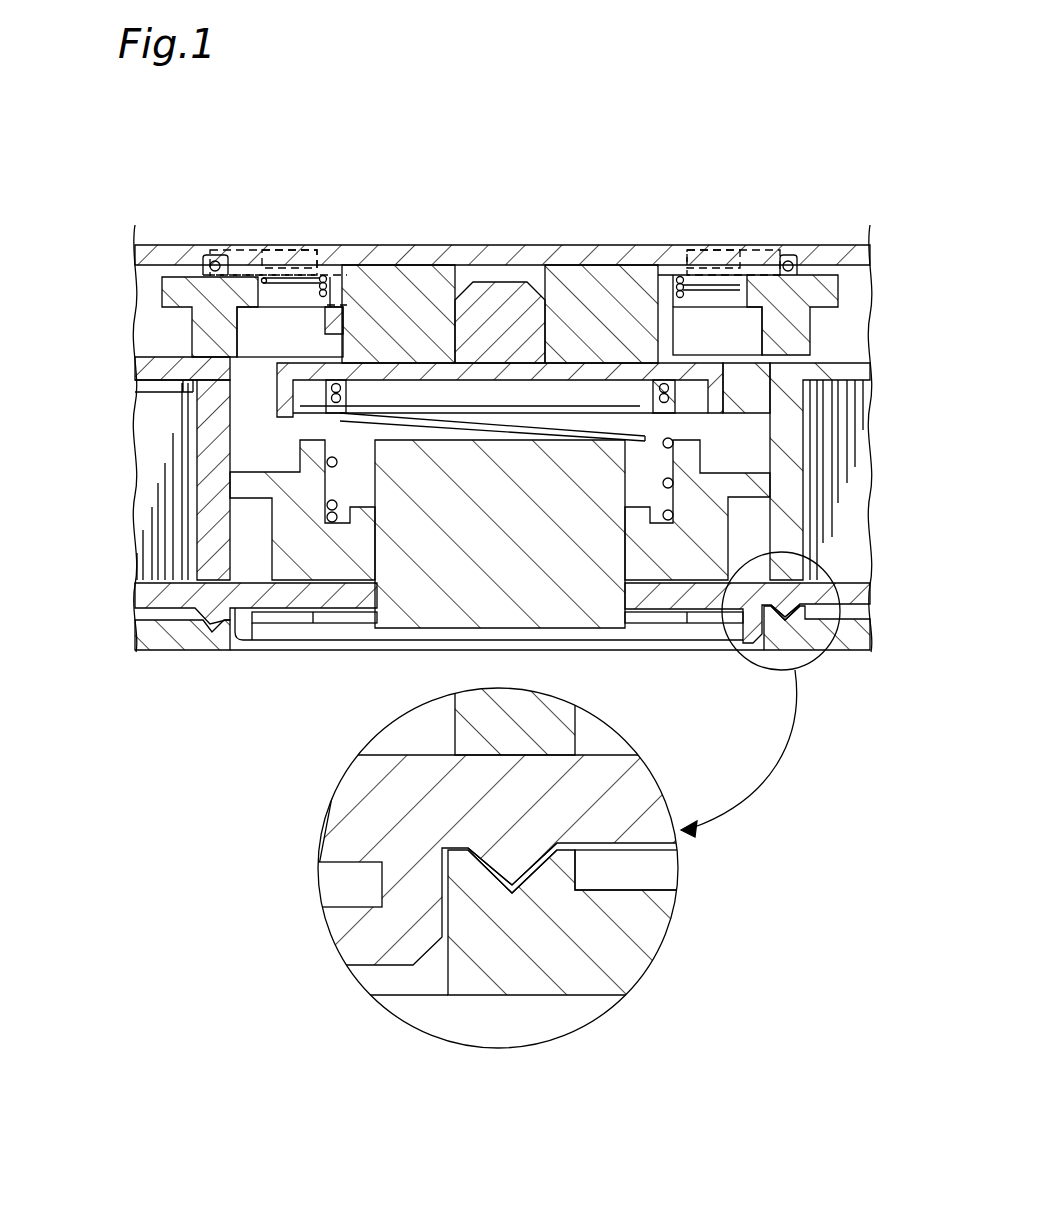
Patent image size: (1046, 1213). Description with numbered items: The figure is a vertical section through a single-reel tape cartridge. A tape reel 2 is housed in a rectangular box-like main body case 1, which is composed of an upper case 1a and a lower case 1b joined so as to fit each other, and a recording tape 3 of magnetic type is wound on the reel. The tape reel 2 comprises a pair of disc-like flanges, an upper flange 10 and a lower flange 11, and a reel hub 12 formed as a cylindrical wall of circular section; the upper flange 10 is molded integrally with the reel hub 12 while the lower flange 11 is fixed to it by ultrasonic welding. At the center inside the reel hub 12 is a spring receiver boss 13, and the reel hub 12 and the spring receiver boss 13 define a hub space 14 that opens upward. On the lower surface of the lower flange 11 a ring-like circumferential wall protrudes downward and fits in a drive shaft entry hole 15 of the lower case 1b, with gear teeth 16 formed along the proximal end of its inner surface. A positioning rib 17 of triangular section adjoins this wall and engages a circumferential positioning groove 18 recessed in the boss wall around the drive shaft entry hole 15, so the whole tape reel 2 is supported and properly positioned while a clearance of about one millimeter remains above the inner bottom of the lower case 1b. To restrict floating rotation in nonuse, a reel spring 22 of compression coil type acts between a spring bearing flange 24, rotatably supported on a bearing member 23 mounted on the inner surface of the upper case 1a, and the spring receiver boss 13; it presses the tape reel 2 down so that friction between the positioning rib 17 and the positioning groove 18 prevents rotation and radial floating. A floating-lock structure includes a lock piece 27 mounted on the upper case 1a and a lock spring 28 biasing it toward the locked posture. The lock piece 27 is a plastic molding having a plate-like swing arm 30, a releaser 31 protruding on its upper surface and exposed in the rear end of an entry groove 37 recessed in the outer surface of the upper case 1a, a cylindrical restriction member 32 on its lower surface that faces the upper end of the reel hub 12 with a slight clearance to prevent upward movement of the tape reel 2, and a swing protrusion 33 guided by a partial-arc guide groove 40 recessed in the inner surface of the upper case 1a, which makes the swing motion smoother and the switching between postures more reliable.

The main body case 1 is at (513, 245).
The upper case 1a is at (157, 243).
The lower case 1b is at (167, 652).
The tape reel 2 is at (150, 343).
The recording tape 3 is at (160, 543).
The upper flange 10 is at (145, 368).
The lower flange 11 is at (143, 600).
The reel hub 12 is at (203, 422).
The spring receiver boss 13 is at (693, 450).
The hub space 14 is at (250, 450).
The drive shaft entry hole 15 is at (760, 645).
The gear teeth 16 is at (708, 620).
The positioning rib 17 is at (205, 622).
The positioning groove 18 is at (491, 868).
The reel spring 22 is at (640, 440).
The bearing member 23 is at (607, 278).
The spring bearing flange 24 is at (735, 368).
The lock piece 27 is at (148, 293).
The lock spring 28 is at (318, 292).
The swing arm 30 is at (170, 282).
The releaser 31 is at (317, 250).
The restriction member 32 is at (238, 340).
The swing protrusion 33 is at (551, 212).
The entry groove 37 is at (262, 252).
The guide groove 40 is at (215, 257).